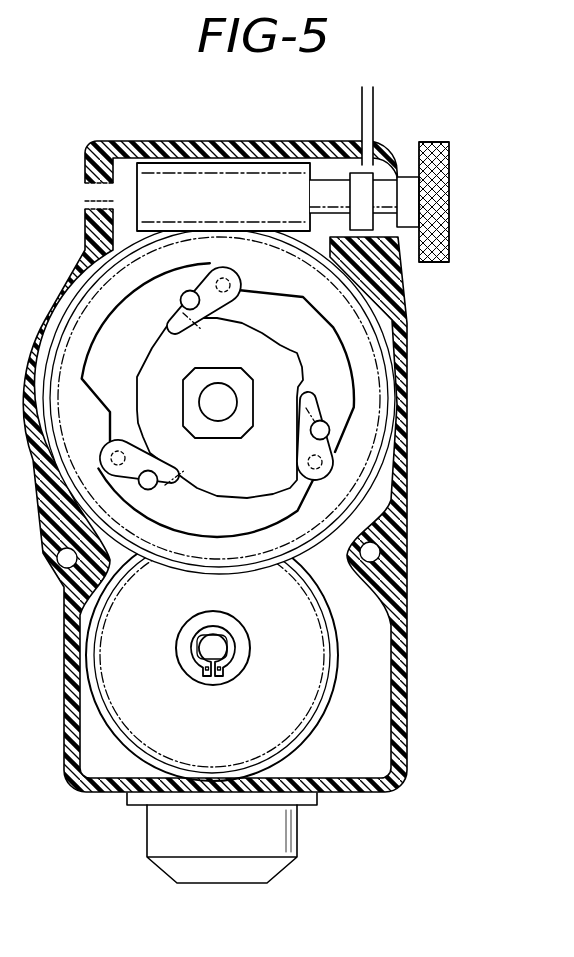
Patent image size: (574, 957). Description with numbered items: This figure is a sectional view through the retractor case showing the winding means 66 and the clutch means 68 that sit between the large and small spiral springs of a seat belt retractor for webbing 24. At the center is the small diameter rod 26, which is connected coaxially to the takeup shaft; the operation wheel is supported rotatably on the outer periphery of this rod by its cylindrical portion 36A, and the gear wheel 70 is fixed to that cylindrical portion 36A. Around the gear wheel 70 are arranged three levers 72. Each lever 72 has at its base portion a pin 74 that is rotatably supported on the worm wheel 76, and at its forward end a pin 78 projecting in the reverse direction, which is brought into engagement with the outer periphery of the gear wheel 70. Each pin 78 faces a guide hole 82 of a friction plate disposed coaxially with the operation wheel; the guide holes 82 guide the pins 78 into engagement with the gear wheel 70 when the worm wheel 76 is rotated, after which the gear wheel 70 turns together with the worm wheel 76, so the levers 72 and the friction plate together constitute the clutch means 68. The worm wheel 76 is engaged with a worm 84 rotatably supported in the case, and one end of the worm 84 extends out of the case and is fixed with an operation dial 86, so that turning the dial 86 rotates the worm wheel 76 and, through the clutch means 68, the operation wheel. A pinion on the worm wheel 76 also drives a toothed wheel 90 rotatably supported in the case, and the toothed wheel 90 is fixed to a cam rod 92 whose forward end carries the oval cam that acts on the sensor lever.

The webbing 24 is at (375, 116).
The small diameter rod 26 is at (218, 392).
The cylindrical portion 36A is at (245, 392).
The winding means 66 is at (320, 178).
The clutch means 68 is at (371, 359).
The gear wheel 70 is at (287, 345).
The lever 72 is at (236, 299).
The pin 74 is at (231, 281).
The worm wheel 76 is at (381, 424).
The pin 78 is at (180, 298).
The guide hole 82 is at (172, 312).
The worm 84 is at (230, 163).
The operation dial 86 is at (453, 190).
The toothed wheel 90 is at (334, 645).
The cam rod 92 is at (228, 645).